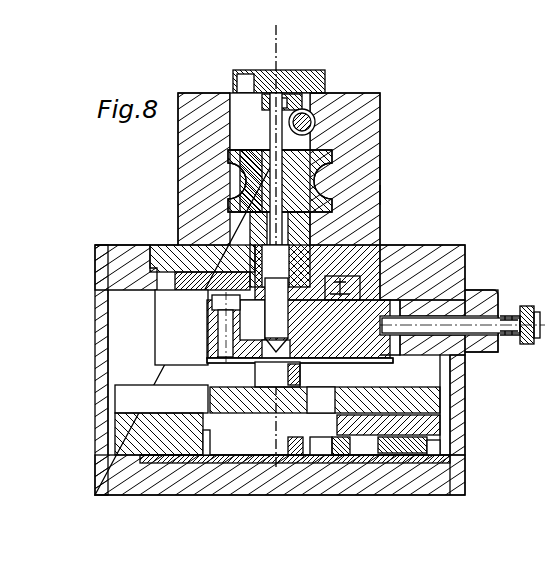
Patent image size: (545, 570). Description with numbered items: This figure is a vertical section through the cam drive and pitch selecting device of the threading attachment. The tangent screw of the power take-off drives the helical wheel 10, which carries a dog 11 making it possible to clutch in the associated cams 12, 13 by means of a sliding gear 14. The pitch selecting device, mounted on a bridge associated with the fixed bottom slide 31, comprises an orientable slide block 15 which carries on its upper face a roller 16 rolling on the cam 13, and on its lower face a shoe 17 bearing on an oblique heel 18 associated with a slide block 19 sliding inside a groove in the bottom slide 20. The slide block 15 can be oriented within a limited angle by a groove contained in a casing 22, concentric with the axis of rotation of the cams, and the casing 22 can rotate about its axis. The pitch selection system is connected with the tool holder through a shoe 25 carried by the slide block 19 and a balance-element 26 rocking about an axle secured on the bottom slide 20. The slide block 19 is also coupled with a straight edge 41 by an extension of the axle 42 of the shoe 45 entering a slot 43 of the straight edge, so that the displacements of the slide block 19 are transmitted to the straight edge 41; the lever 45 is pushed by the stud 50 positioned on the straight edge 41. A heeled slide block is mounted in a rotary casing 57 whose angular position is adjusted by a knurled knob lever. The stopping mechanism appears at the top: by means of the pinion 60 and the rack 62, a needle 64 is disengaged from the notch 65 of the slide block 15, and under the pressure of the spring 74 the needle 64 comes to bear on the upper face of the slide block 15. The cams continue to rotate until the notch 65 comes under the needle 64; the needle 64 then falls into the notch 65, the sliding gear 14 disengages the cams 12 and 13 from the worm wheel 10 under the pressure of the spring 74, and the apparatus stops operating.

The helical wheel 10 is at (378, 147).
The dog 11 is at (380, 196).
The cam 12 is at (392, 247).
The cam 13 is at (435, 247).
The sliding gear 14 is at (380, 222).
The orientable slide block 15 is at (455, 352).
The roller 16 is at (172, 245).
The shoe 17 is at (247, 383).
The oblique heel 18 is at (223, 397).
The slide block 19 is at (213, 455).
The bottom slide 20 is at (162, 438).
The casing 22 is at (237, 215).
The shoe 25 is at (313, 445).
The balance-element 26 is at (400, 453).
The fixed bottom slide 31 is at (447, 470).
The straight edge 41 is at (405, 465).
The axle 42 is at (298, 455).
The slot 43 is at (340, 455).
The lever 45 is at (440, 442).
The stud 50 is at (445, 412).
The rotary casing 57 is at (537, 353).
The pinion 60 is at (313, 112).
The rack 62 is at (297, 100).
The needle 64 is at (262, 168).
The notch 65 is at (303, 362).
The spring 74 is at (380, 170).